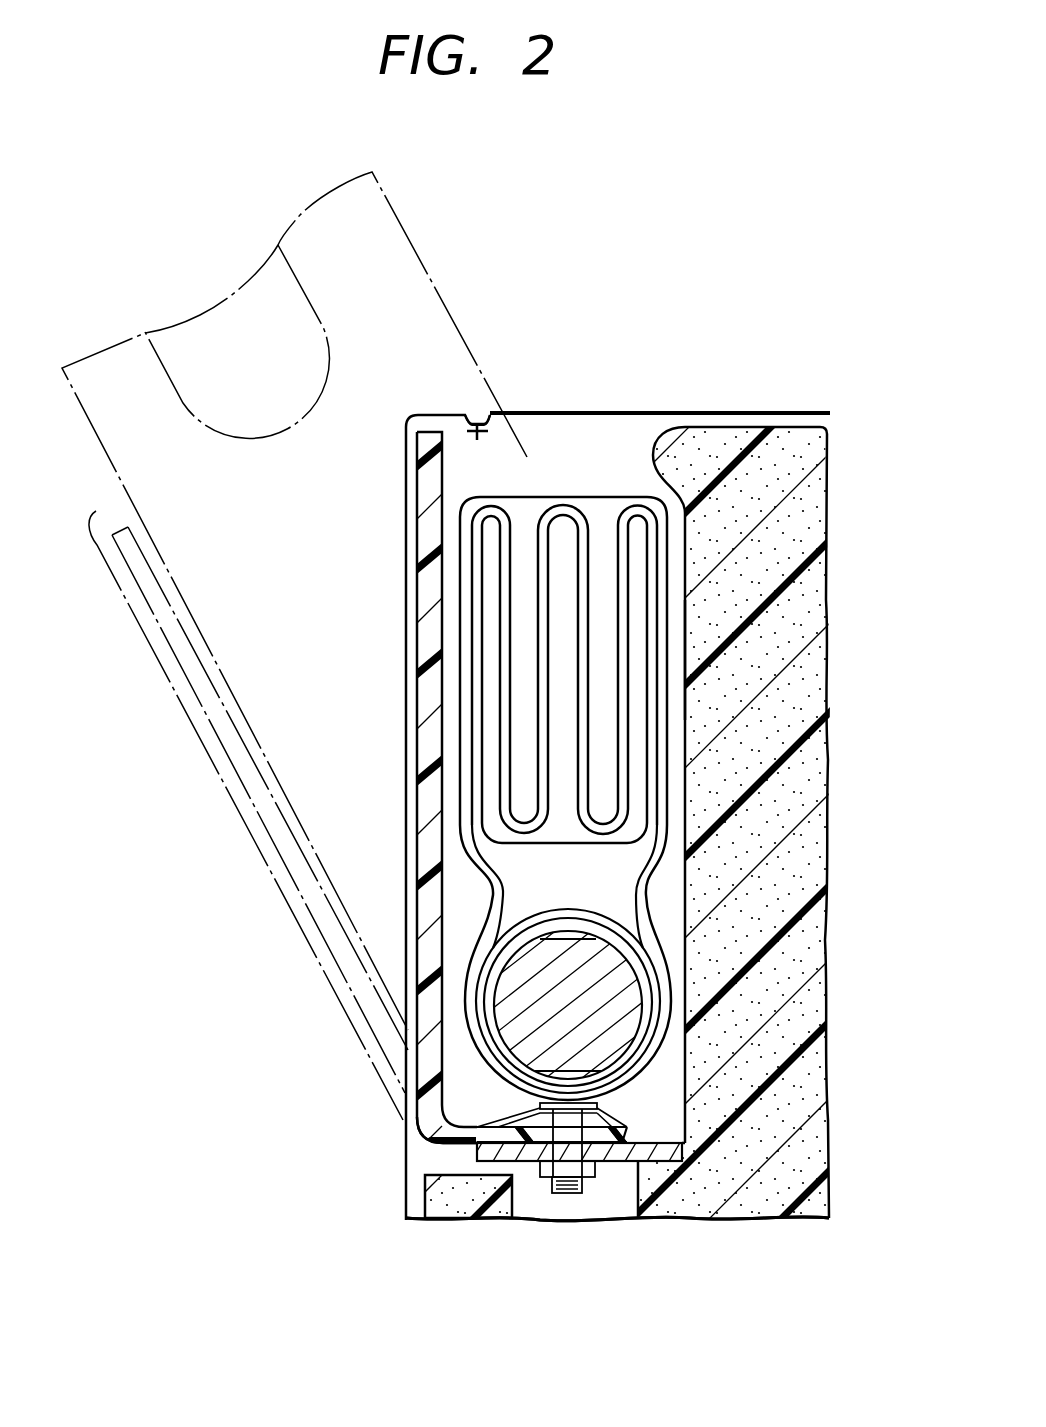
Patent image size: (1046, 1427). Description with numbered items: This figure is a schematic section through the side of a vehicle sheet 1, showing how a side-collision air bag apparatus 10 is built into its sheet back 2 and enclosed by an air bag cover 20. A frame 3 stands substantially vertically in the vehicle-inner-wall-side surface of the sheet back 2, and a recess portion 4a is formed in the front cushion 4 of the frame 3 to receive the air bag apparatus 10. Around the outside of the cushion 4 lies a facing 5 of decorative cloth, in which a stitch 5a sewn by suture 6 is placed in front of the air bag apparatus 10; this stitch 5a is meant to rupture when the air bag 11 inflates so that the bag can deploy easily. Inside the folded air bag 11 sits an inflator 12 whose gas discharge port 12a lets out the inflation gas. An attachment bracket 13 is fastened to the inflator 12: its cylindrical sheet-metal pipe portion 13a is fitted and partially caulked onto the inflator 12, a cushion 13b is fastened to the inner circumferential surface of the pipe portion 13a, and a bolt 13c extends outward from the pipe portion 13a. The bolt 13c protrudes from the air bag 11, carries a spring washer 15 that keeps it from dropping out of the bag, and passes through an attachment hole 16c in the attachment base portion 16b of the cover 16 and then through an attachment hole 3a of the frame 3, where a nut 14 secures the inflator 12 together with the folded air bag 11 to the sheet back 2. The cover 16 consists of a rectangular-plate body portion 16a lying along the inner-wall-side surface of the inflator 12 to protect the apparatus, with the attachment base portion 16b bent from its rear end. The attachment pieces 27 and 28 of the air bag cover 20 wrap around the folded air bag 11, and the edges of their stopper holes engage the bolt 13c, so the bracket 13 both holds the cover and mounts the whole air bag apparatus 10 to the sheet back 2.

The vehicle sheet 1 is at (787, 1222).
The sheet back 2 is at (617, 1219).
The frame 3 is at (477, 1152).
The attachment hole 3a is at (573, 1195).
The cushion 4 is at (830, 437).
The recess portion 4a is at (682, 655).
The facing 5 is at (723, 413).
The stitch 5a is at (477, 410).
The suture 6 is at (488, 427).
The side-collision air bag apparatus 10 is at (672, 1060).
The air bag 11 is at (583, 505).
The inflator 12 is at (507, 977).
The gas discharge port 12a is at (568, 932).
The attachment bracket 13 is at (605, 911).
The pipe portion 13a is at (648, 963).
The cushion 13b is at (647, 987).
The bolt 13c is at (567, 1194).
The nut 14 is at (555, 1140).
The spring washer 15 is at (421, 1133).
The cover 16 is at (406, 658).
The body portion 16a is at (428, 728).
The attachment base portion 16b is at (524, 1142).
The attachment hole 16c is at (614, 1143).
The air bag cover 20 is at (634, 498).
The attachment piece 27 is at (482, 1102).
The attachment piece 28 is at (675, 1180).